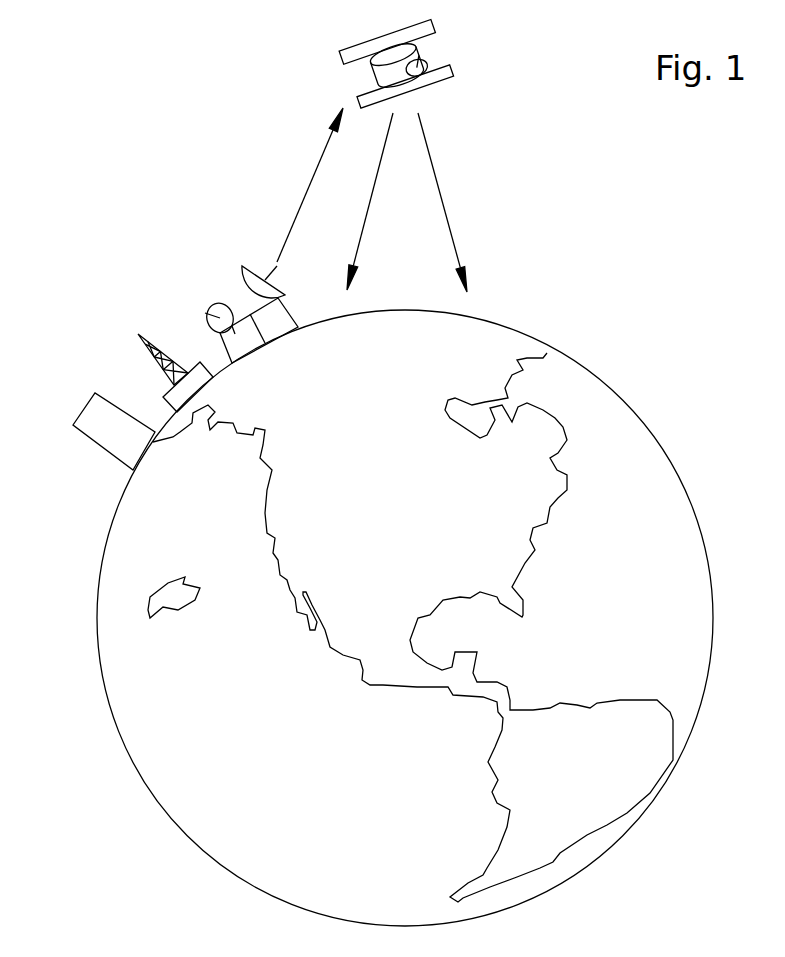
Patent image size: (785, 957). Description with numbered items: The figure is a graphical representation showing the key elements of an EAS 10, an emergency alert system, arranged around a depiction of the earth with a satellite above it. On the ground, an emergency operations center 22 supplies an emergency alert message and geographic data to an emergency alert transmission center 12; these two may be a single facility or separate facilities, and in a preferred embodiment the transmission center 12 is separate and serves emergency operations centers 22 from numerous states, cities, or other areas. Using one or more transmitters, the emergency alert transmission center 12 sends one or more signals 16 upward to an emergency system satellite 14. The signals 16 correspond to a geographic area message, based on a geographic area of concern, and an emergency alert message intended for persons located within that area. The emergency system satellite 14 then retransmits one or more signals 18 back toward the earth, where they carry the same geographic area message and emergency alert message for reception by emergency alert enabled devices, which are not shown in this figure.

The EAS 10 is at (240, 190).
The emergency alert transmission center 12 is at (240, 317).
The emergency system satellite 14 is at (417, 47).
The signals 16 is at (305, 195).
The signals 18 is at (438, 180).
The emergency operations center 22 is at (112, 403).